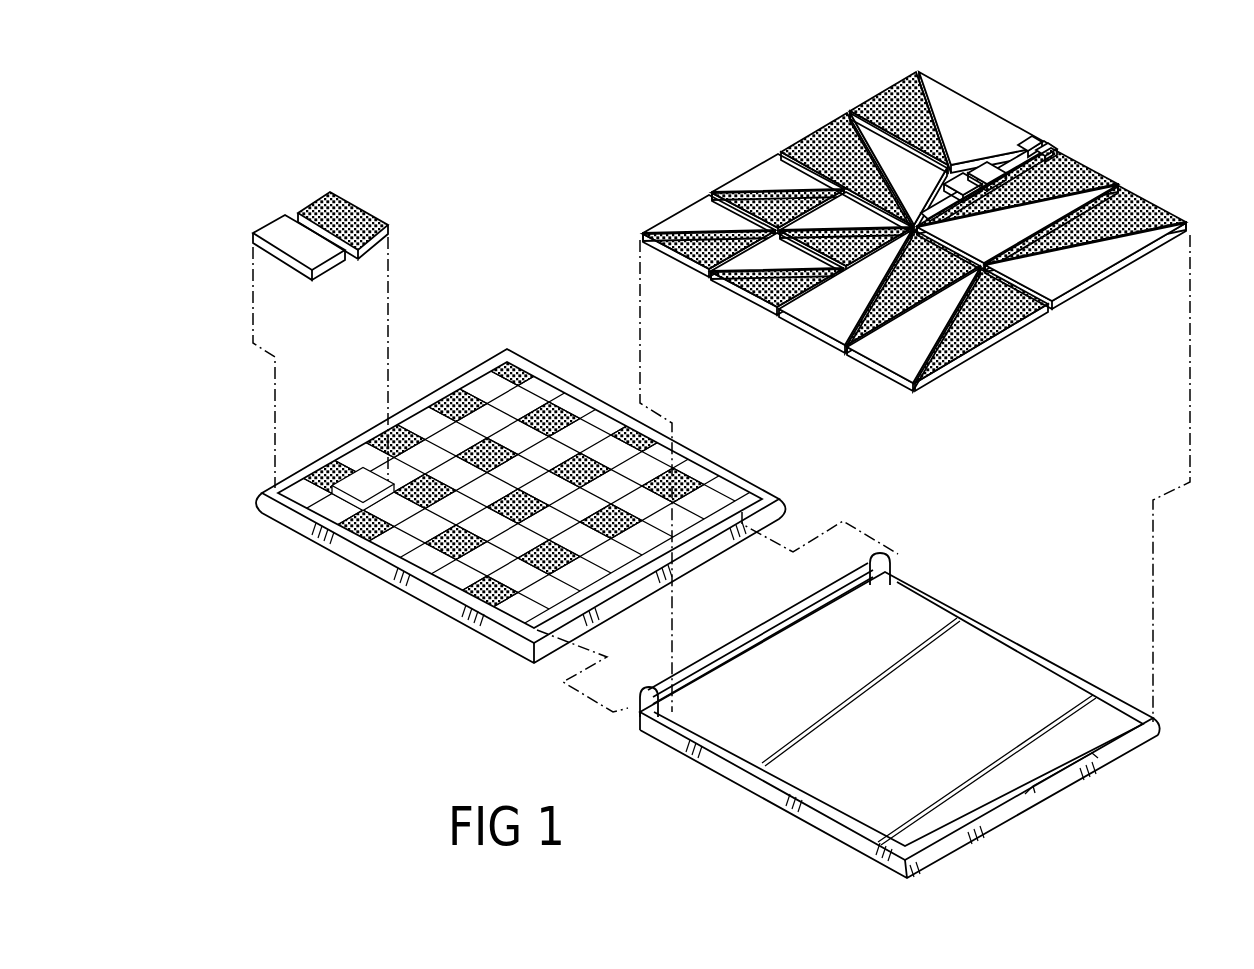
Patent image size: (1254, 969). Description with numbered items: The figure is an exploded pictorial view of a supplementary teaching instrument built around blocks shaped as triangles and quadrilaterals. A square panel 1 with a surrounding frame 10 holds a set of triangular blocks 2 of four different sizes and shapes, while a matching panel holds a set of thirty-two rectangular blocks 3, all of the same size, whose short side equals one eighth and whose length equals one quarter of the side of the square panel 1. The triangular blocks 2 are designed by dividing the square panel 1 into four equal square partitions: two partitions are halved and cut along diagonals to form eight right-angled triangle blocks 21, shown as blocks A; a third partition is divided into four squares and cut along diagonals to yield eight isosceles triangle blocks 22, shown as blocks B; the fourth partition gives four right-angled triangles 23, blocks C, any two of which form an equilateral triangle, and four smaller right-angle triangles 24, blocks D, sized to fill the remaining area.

The square panel 1 is at (708, 606).
The triangular blocks 2 is at (583, 120).
The rectangular blocks 3 is at (205, 195).
The frame 10 is at (512, 356).
The right-angled triangle blocks 21 is at (808, 318).
The isosceles triangle blocks 22 is at (663, 236).
The right-angled triangles 23 is at (852, 110).
The smaller right-angle triangles 24 is at (1027, 137).